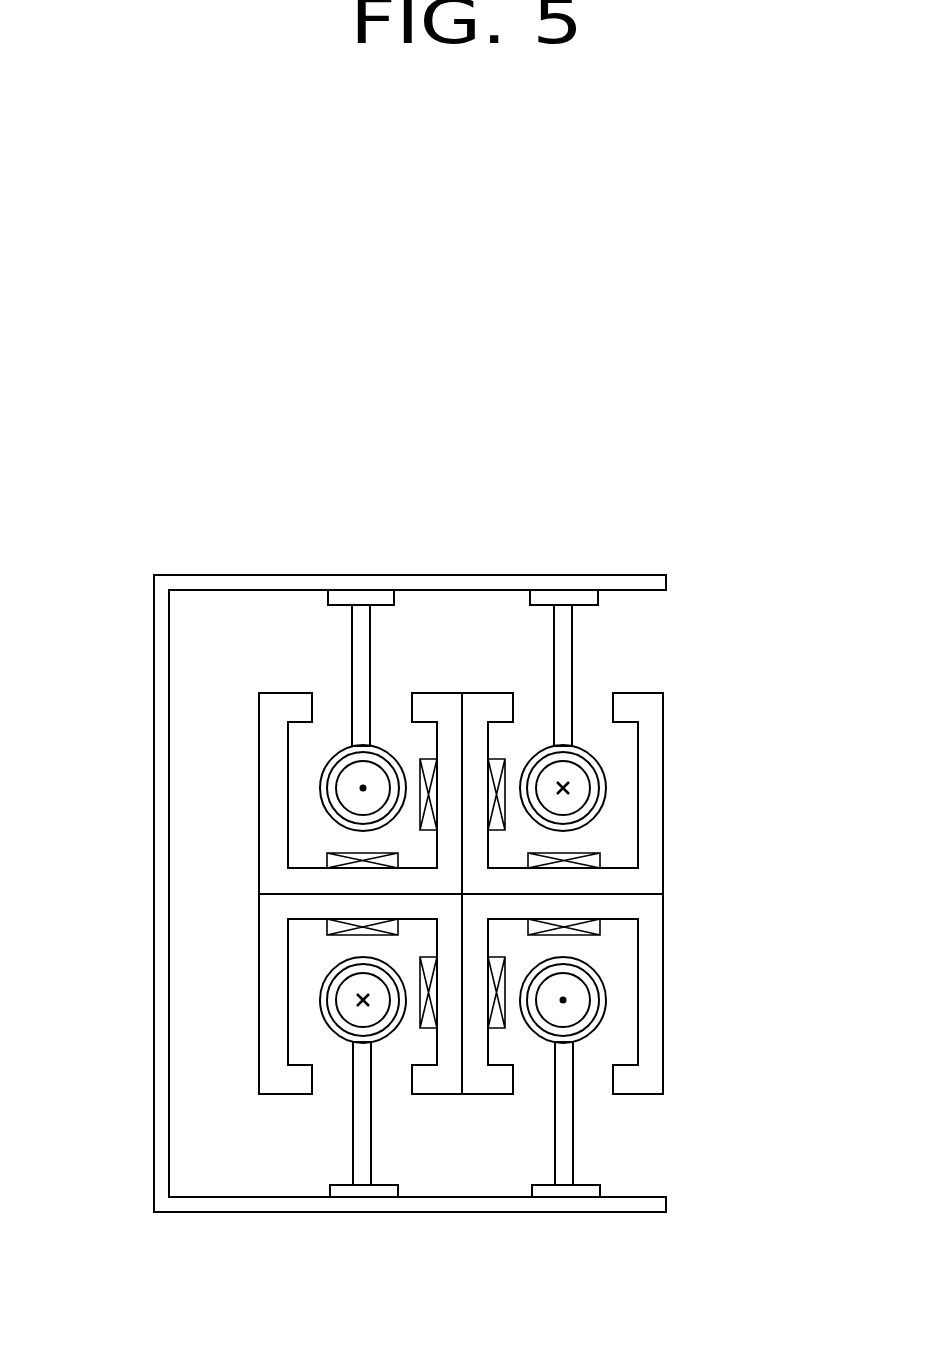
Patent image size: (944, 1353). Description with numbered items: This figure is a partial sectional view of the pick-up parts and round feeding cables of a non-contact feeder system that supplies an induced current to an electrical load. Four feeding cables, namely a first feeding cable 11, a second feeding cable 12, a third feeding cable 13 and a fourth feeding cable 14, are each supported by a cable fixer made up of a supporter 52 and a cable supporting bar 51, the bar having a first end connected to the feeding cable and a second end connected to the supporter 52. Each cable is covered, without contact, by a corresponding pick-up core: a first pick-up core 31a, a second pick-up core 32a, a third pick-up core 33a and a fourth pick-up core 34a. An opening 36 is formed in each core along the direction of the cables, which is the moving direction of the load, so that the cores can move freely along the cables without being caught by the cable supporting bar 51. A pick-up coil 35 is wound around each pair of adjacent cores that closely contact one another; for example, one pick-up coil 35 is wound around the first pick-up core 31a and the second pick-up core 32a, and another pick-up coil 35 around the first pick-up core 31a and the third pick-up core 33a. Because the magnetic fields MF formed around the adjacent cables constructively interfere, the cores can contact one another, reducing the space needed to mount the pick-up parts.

The first feeding cable 11 is at (347, 792).
The second feeding cable 12 is at (583, 785).
The third feeding cable 13 is at (347, 999).
The fourth feeding cable 14 is at (585, 998).
The first pick-up core 31a is at (285, 702).
The second pick-up core 32a is at (657, 705).
The third pick-up core 33a is at (268, 1055).
The fourth pick-up core 34a is at (657, 1062).
The pick-up coil 35 is at (505, 765).
The opening 36 is at (312, 706).
The cable supporting bar 51 is at (368, 692).
The supporter 52 is at (153, 660).
The magnetic field MF is at (340, 752).